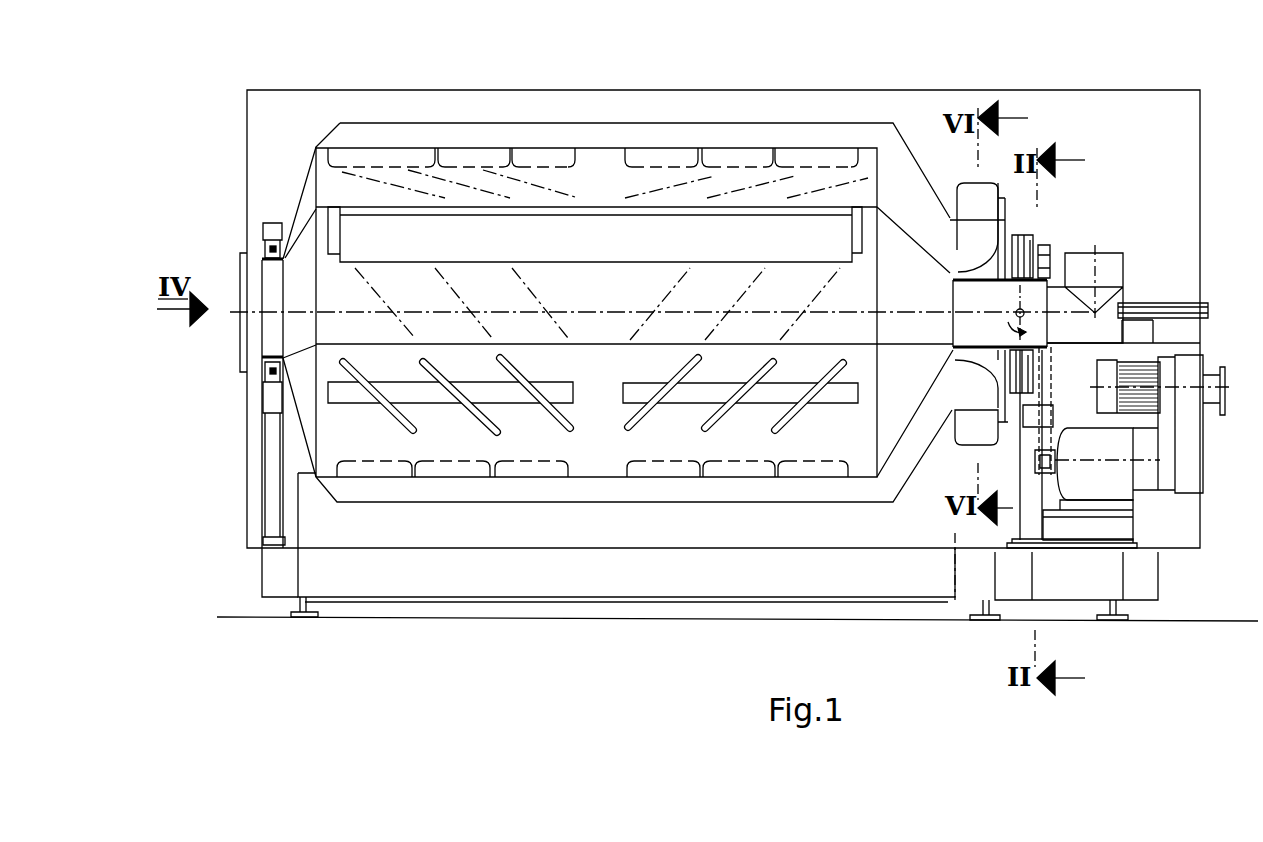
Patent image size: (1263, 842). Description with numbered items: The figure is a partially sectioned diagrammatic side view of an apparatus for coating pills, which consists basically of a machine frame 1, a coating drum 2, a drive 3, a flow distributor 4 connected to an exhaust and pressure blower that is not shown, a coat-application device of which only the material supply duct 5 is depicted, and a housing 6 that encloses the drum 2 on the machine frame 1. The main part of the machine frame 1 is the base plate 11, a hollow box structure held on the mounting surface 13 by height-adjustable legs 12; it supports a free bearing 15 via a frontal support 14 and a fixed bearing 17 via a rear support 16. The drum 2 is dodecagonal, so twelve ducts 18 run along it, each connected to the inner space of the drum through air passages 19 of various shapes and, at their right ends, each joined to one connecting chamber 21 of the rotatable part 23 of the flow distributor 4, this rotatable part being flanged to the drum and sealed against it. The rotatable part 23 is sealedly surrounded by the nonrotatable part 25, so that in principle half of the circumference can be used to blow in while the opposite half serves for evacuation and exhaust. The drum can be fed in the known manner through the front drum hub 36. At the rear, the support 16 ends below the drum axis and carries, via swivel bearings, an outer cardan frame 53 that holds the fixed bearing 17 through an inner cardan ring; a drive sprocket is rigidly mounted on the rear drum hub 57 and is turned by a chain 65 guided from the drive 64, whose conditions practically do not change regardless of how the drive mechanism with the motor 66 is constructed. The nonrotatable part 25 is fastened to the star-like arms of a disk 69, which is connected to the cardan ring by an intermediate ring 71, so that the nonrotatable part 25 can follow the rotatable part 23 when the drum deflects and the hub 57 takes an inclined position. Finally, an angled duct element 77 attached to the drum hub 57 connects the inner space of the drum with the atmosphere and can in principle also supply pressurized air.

The machine frame 1 is at (253, 580).
The coating drum 2 is at (898, 127).
The drive 3 is at (1113, 483).
The flow distributor 4 is at (1001, 214).
The material supply duct 5 is at (1168, 303).
The housing 6 is at (1200, 100).
The base plate 11 is at (560, 587).
The height-adjustable legs 12 is at (318, 617).
The mounting surface 13 is at (1215, 620).
The frontal support 14 is at (270, 452).
The free bearing 15 is at (262, 380).
The rear support 16 is at (1028, 487).
The fixed bearing 17 is at (1058, 250).
The ducts 18 is at (672, 143).
The air passages 19 is at (512, 403).
The connecting chamber 21 is at (983, 250).
The rotatable part 23 is at (950, 217).
The nonrotatable part 25 is at (993, 184).
The drum hub 36 is at (273, 263).
The outer cardan frame 53 is at (1027, 270).
The drum hub 57 is at (1000, 313).
The drive 64 is at (1114, 458).
The chain 65 is at (1050, 392).
The motor 66 is at (1097, 378).
The disk 69 is at (1007, 223).
The intermediate ring 71 is at (1009, 312).
The angled duct element 77 is at (1113, 272).